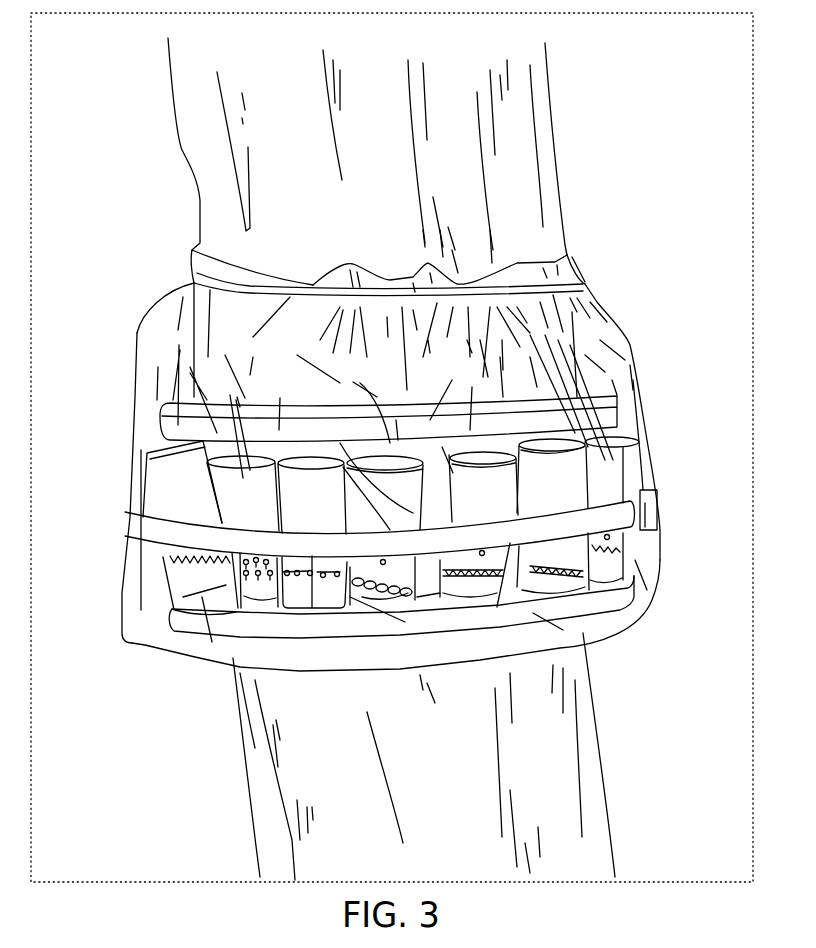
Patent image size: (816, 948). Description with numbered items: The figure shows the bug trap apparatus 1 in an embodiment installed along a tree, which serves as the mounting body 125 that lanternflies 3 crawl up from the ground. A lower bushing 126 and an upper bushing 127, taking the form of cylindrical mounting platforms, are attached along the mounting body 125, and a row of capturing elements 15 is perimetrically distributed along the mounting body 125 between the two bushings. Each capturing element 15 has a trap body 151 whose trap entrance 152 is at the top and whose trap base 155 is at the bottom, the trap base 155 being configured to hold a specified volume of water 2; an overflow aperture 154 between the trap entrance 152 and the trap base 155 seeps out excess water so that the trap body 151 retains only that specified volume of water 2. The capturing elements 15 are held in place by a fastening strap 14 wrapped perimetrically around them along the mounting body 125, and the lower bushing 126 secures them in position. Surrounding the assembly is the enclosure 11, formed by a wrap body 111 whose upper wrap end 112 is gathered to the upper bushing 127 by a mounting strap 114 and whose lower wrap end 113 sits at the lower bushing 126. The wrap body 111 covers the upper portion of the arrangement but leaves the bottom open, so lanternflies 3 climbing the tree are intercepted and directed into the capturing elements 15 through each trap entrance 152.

The bug trap apparatus 1 is at (133, 150).
The enclosure 11 is at (156, 302).
The wrap body 111 is at (137, 333).
The upper wrap end 112 is at (566, 238).
The lower wrap end 113 is at (139, 649).
The mounting strap 114 is at (590, 280).
The mounting body 125 is at (257, 830).
The lower bushing 126 is at (236, 640).
The upper bushing 127 is at (160, 401).
The fastening strap 14 is at (133, 513).
The capturing element 15 is at (138, 477).
The trap body 151 is at (507, 580).
The trap entrance 152 is at (158, 447).
The overflow aperture 154 is at (312, 598).
The trap base 155 is at (465, 603).
The water 2 is at (330, 603).
The lanternflies 3 is at (162, 548).